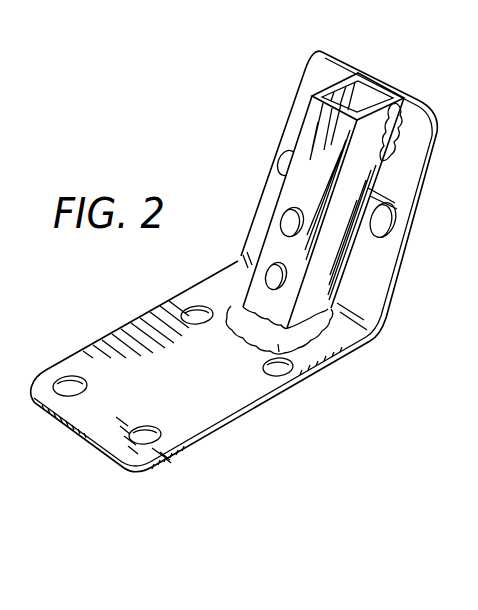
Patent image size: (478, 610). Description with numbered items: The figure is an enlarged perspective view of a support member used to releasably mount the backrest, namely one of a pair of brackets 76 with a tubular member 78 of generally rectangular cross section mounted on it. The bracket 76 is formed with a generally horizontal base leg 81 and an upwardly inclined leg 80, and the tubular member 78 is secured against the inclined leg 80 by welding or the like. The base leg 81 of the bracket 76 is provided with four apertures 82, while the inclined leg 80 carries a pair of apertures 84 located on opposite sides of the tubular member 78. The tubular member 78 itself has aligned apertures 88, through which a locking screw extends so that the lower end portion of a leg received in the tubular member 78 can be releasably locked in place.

The bracket 76 is at (253, 390).
The tubular member 78 is at (352, 183).
The upwardly inclined leg 80 is at (363, 280).
The base leg 81 is at (189, 400).
The apertures 82 is at (70, 382).
The apertures 84 is at (280, 165).
The aligned apertures 88 is at (283, 220).